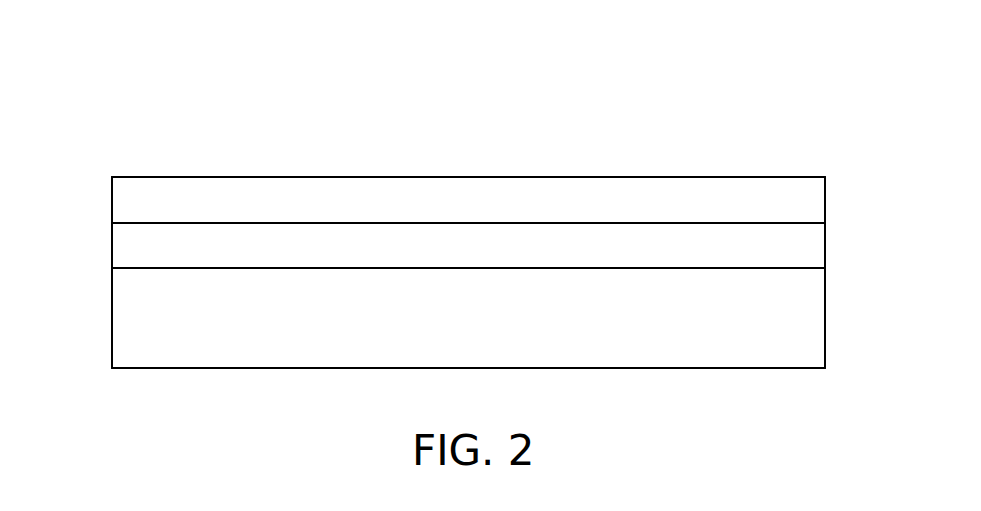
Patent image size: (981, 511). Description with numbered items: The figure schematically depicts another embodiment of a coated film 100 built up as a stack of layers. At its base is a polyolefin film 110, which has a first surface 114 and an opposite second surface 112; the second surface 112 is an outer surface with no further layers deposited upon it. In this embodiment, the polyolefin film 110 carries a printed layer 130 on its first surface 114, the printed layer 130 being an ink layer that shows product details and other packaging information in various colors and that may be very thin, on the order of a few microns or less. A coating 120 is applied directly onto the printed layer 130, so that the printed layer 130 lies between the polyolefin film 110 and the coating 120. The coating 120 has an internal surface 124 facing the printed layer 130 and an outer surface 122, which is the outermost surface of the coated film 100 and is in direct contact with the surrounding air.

The coated film 100 is at (145, 108).
The polyolefin film 110 is at (842, 223).
The second surface 112 is at (326, 369).
The first surface 114 is at (273, 223).
The coating 120 is at (825, 200).
The outer surface 122 is at (343, 177).
The internal surface 124 is at (393, 224).
The printed layer 130 is at (112, 247).